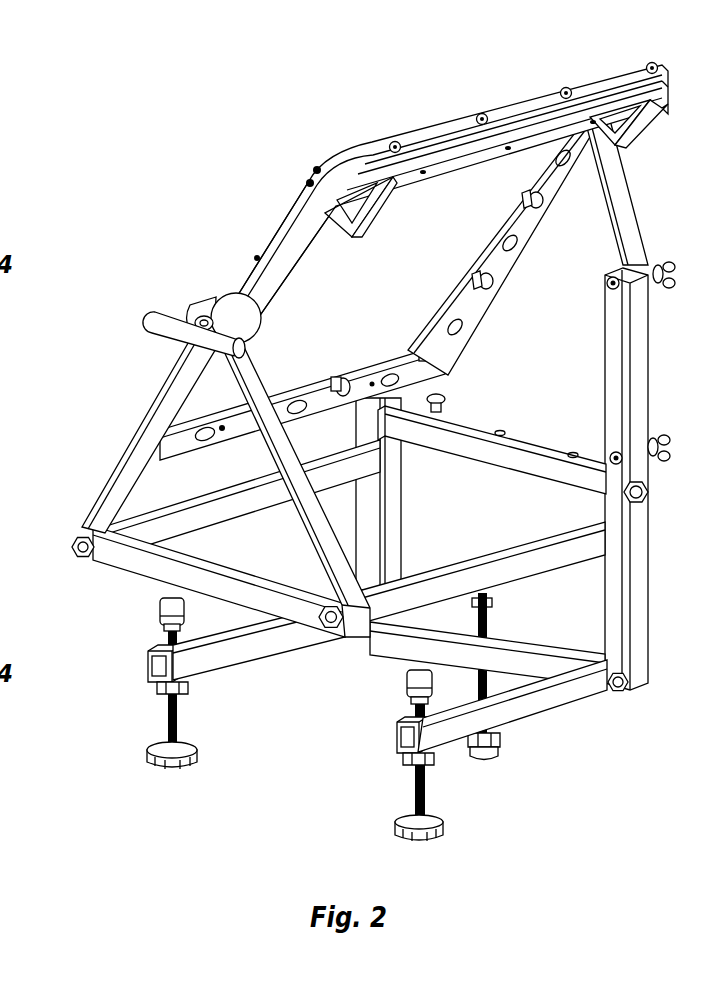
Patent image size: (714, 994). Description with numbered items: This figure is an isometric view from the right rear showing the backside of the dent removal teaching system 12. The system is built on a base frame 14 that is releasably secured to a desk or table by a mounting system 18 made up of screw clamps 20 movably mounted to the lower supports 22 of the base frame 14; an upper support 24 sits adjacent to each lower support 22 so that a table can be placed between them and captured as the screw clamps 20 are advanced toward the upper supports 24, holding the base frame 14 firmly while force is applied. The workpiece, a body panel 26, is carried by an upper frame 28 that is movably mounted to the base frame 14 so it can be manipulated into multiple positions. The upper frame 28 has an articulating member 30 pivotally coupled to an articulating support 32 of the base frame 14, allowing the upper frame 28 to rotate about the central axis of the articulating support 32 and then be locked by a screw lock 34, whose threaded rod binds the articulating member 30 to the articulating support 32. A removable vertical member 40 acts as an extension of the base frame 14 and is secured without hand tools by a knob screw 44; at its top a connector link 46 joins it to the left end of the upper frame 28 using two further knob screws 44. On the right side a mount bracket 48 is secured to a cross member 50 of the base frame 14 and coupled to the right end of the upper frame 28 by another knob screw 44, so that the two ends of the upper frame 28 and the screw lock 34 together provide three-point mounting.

The dent removal teaching system 12 is at (255, 119).
The base frame 14 is at (116, 600).
The mounting system 18 is at (381, 725).
The screw clamp 20 is at (147, 755).
The lower support 22 is at (243, 648).
The upper support 24 is at (213, 512).
The body panel 26 is at (327, 277).
The upper frame 28 is at (503, 319).
The articulating member 30 is at (247, 298).
The articulating support 32 is at (220, 300).
The screw lock 34 is at (168, 333).
The removable vertical member 40 is at (615, 388).
The knob screw 44 is at (655, 260).
The connector link 46 is at (617, 207).
The mount bracket 48 is at (445, 397).
The cross member 50 is at (525, 463).